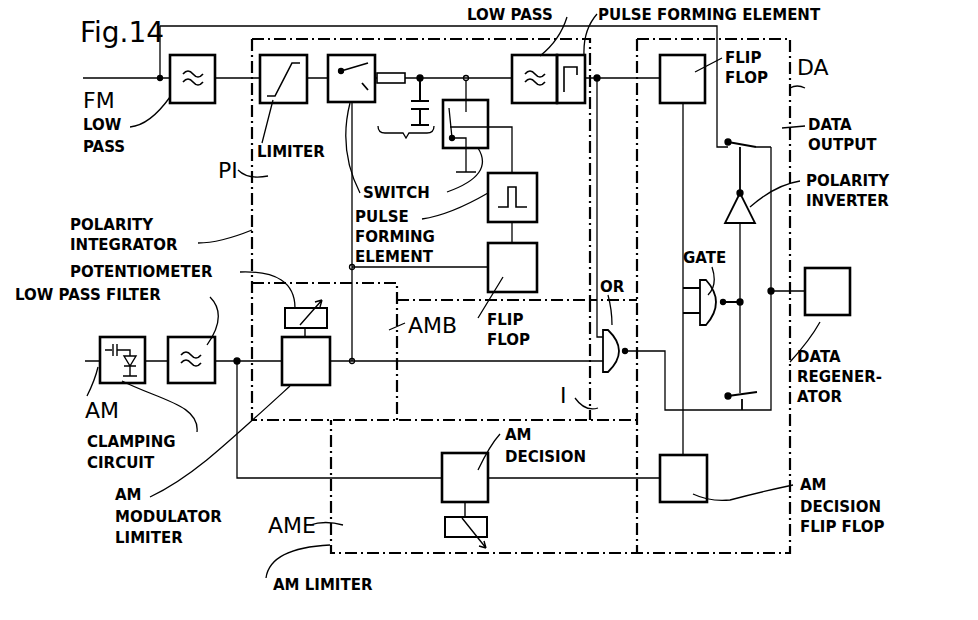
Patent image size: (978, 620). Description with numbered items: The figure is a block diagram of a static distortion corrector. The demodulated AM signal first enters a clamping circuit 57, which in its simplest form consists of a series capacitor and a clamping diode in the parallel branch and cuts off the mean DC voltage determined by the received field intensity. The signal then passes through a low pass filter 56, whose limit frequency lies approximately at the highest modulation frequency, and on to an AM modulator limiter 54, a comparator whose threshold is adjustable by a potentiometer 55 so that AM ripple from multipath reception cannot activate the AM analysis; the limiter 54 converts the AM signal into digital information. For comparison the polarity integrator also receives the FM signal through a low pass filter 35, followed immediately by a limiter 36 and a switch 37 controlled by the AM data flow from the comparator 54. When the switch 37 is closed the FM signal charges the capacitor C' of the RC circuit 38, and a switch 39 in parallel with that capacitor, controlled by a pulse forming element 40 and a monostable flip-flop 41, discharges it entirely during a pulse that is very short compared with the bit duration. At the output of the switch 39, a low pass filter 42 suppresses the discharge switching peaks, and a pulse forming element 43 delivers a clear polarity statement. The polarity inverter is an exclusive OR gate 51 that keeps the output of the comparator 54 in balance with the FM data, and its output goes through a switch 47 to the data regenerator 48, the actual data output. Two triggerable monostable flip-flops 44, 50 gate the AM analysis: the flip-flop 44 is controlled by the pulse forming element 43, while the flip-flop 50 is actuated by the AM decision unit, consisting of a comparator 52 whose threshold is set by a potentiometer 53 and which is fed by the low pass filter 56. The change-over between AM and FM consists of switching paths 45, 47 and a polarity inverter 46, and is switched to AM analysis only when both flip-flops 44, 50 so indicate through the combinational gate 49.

The low pass filter 35 is at (205, 105).
The limiter 36 is at (300, 105).
The switch 37 is at (349, 105).
The circuit comprising a resistor and a capacitor 38 is at (405, 108).
The switch 39 is at (456, 150).
The pulse forming element 40 is at (546, 190).
The monostable flip-flop circuit 41 is at (536, 264).
The low pass filter 42 is at (544, 105).
The pulse forming element 43 is at (583, 105).
The monostable flip-flop 44 is at (676, 104).
The switching path 45 is at (740, 151).
The polarity inverter 46 is at (728, 213).
The switch 47 is at (741, 418).
The data regenerator 48 is at (827, 309).
The gate 49 is at (710, 325).
The monostable flip-flop 50 is at (697, 478).
The exclusive OR gate 51 is at (616, 369).
The comparator 52 is at (473, 458).
The potentiometer 53 is at (452, 527).
The AM modulator limiter 54 is at (318, 372).
The potentiometer 55 is at (286, 320).
The low pass filter 56 is at (196, 322).
The clamping circuit 57 is at (123, 322).